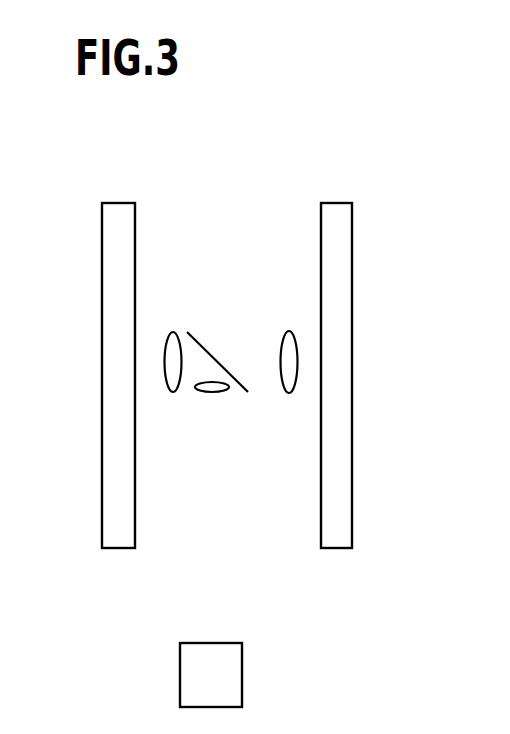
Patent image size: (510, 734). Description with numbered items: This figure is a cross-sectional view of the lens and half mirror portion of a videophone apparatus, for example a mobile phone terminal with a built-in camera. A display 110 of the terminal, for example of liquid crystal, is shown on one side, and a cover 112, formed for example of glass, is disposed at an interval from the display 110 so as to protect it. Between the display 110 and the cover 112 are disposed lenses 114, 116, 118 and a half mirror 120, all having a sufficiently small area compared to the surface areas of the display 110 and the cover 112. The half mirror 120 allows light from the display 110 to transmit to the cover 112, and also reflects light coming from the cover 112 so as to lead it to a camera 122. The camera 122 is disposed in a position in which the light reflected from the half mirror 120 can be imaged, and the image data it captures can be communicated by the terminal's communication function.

The display 110 is at (315, 504).
The cover 112 is at (98, 193).
The lens 114 is at (284, 320).
The lens 116 is at (172, 407).
The lens 118 is at (216, 407).
The half mirror 120 is at (206, 331).
The camera 122 is at (132, 675).